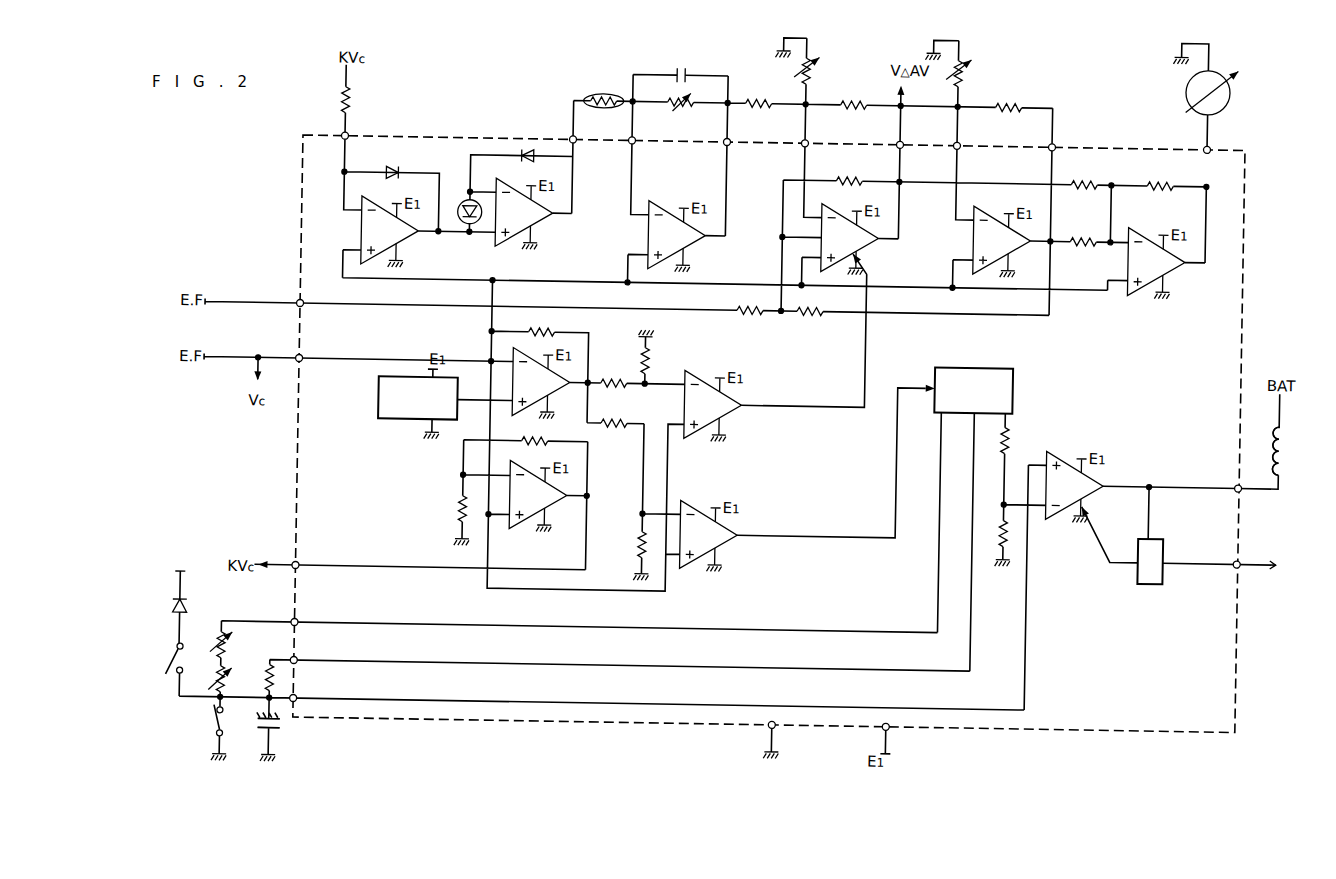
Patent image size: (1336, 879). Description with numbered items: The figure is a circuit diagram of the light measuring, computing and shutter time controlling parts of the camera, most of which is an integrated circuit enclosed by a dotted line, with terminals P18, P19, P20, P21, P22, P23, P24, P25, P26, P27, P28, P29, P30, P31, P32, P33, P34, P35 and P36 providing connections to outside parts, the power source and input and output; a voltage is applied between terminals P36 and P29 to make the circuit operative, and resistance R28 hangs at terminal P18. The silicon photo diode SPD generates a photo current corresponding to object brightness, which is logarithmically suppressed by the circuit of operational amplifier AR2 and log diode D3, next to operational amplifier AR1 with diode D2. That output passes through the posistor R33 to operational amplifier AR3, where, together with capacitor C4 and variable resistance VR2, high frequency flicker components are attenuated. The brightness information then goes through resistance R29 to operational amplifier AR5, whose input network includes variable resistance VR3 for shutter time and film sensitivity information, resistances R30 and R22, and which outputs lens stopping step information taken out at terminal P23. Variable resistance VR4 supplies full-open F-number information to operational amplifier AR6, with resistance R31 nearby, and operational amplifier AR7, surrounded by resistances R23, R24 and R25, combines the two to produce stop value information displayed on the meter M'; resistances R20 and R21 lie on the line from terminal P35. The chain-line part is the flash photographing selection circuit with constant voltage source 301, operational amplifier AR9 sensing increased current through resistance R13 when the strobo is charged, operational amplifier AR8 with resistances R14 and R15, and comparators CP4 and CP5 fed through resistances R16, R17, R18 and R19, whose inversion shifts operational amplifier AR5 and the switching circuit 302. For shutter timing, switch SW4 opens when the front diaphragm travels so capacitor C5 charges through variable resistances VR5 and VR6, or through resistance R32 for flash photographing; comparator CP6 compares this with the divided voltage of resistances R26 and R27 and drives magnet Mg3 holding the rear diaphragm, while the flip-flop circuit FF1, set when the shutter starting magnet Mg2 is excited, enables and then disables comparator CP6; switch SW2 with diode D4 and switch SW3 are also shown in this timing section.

The resistance R28 is at (359, 100).
The terminal P18 is at (357, 147).
The terminal P19 is at (585, 151).
The terminal P20 is at (644, 152).
The terminal P21 is at (739, 153).
The terminal P22 is at (817, 155).
The terminal P23 is at (912, 156).
The terminal P24 is at (969, 157).
The terminal P25 is at (1064, 159).
The terminal P26 is at (1219, 161).
The diode D2 is at (394, 164).
The log diode D3 is at (519, 166).
The operational amplifier AR1 is at (391, 230).
The silicon photo diode SPD is at (471, 229).
The operational amplifier AR2 is at (525, 212).
The posistor R33 is at (604, 92).
The capacitor C4 is at (682, 66).
The variable resistance VR2 is at (681, 114).
The operational amplifier AR3 is at (678, 235).
The resistance R29 is at (758, 115).
The variable resistance VR3 is at (821, 70).
The resistance R30 is at (853, 117).
The resistance R22 is at (849, 173).
The operational amplifier AR5 is at (851, 238).
The variable resistance VR4 is at (974, 72).
The resistance R31 is at (1009, 120).
The operational amplifier AR6 is at (1003, 240).
The resistance R23 is at (1089, 178).
The resistance R25 is at (1161, 177).
The resistance R24 is at (1083, 234).
The operational amplifier AR7 is at (1157, 262).
The stop value display meter M' is at (1218, 92).
The resistance R20 is at (751, 303).
The resistance R21 is at (812, 304).
The terminal P35 is at (312, 314).
The terminal P34 is at (311, 369).
The terminal P33 is at (308, 576).
The terminal P32 is at (307, 633).
The terminal P31 is at (306, 671).
The terminal P30 is at (305, 702).
The terminal P29 is at (785, 736).
The terminal P36 is at (899, 737).
The terminal P27 is at (1229, 500).
The terminal P28 is at (1227, 576).
The constant voltage source 301 is at (418, 397).
The switching circuit 302 is at (973, 390).
The operational amplifier AR9 is at (542, 382).
The operational amplifier AR8 is at (539, 495).
The resistance R13 is at (554, 344).
The resistance R16 is at (613, 375).
The resistance R17 is at (658, 363).
The resistance R18 is at (612, 414).
The resistance R19 is at (629, 546).
The resistance R15 is at (532, 451).
The resistance R14 is at (450, 510).
The comparator CP4 is at (714, 404).
The comparator CP5 is at (709, 534).
The resistance R26 is at (1019, 441).
The resistance R27 is at (992, 533).
The comparator CP6 is at (1075, 485).
The flip-flop circuit FF1 is at (1162, 525).
The magnet Mg3 is at (1294, 451).
The shutter starting magnet Mg2 is at (1290, 567).
The switch SW2 is at (188, 563).
The diode D4 is at (191, 607).
The switch SW3 is at (162, 657).
The variable resistance VR5 is at (238, 644).
The variable resistance VR6 is at (209, 679).
The resistance R32 is at (255, 679).
The switch SW4 is at (203, 721).
The capacitor C5 is at (278, 732).